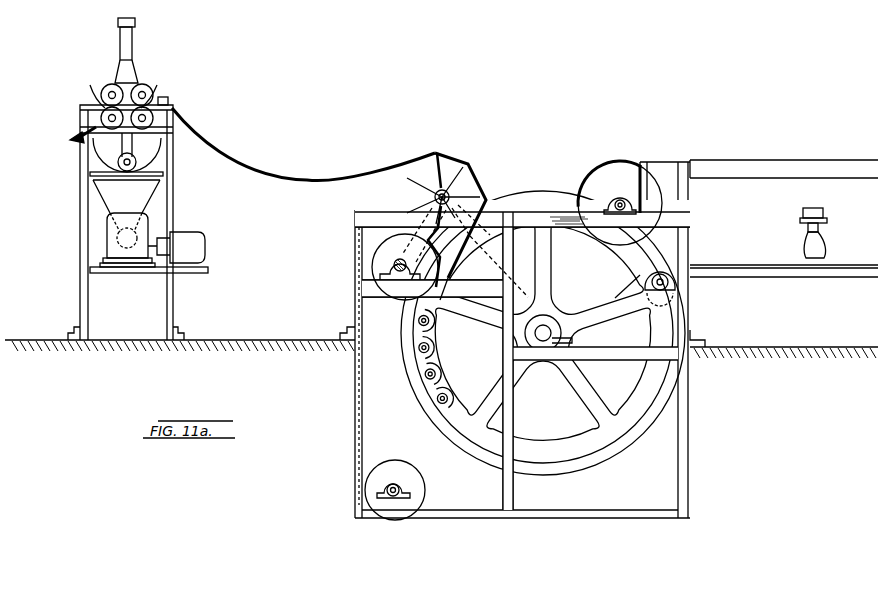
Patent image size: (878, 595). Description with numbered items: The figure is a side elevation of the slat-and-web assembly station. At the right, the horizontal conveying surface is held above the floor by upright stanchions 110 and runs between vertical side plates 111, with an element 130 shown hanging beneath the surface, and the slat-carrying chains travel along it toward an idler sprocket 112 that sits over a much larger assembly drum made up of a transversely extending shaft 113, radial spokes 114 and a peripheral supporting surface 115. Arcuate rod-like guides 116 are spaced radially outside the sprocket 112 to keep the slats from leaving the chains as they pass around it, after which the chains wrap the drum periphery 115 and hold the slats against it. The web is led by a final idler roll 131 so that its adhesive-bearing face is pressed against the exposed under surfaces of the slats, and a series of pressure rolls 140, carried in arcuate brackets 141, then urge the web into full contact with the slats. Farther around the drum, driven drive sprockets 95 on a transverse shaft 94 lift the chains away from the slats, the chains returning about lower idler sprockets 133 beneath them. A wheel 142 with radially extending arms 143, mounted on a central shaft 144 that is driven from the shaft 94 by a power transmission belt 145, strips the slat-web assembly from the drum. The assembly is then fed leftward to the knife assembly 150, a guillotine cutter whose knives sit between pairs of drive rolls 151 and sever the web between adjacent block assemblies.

The drive rolls 151 is at (105, 88).
The knife assembly 150 is at (177, 143).
The wheel 142 is at (447, 179).
The radially extending arms 143 is at (469, 175).
The central shaft 144 is at (430, 194).
The power transmission belt 145 is at (434, 242).
The drive sprockets 95 is at (376, 243).
The transverse shaft 94 is at (393, 267).
The pressure rolls 140 is at (438, 372).
The lower idler sprockets 133 is at (397, 466).
The arcuate brackets 141 is at (543, 340).
The transversely extending shaft 113 is at (552, 333).
The radial spokes 114 is at (549, 253).
The peripheral supporting surface 115 is at (630, 280).
The idler roll 131 is at (658, 270).
The idler sprocket 112 is at (592, 183).
The arcuate rod-like guides 116 is at (602, 164).
The upright stanchions 110 is at (689, 203).
The side plates 111 is at (794, 166).
The hanger 130 is at (815, 259).